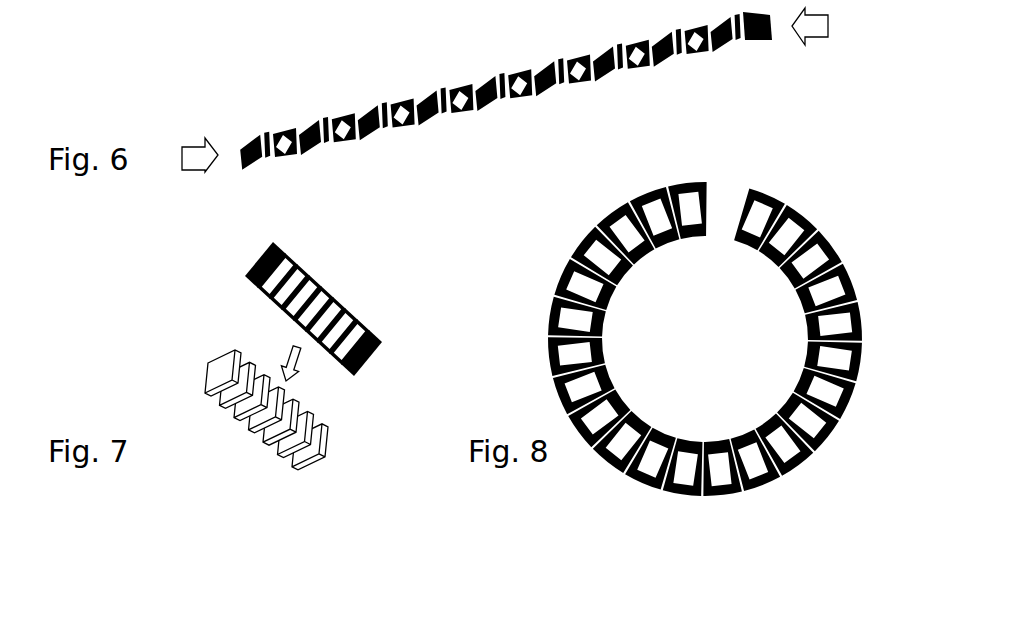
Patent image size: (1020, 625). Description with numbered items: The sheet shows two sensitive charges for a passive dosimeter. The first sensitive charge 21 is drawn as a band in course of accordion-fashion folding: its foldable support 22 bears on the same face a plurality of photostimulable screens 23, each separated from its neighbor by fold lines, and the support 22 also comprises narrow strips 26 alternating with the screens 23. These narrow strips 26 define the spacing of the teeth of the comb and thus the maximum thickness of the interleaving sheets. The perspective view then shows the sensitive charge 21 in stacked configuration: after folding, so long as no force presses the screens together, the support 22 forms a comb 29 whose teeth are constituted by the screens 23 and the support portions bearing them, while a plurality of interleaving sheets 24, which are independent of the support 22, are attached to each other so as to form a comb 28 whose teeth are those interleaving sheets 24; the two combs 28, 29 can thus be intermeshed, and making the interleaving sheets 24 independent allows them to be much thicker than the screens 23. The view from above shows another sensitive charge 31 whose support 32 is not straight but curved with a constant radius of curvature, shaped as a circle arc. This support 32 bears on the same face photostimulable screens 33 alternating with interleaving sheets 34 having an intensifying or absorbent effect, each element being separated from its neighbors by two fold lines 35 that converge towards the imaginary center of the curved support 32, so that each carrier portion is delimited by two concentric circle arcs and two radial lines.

In FIG. 6, the sensitive charge 21 is at (471, 119).
In FIG. 6, the foldable support 22 is at (732, 49).
In FIG. 6, the photostimulable screen 23 is at (285, 133).
In FIG. 6, the narrow strip 26 is at (556, 57).
In FIG. 7, the interleaving sheet 24 is at (299, 449).
In FIG. 7, the comb 28 is at (201, 383).
In FIG. 7, the comb 29 is at (345, 306).
In FIG. 8, the sensitive charge 31 is at (800, 170).
In FIG. 8, the support 32 is at (743, 187).
In FIG. 8, the photostimulable screen 33 is at (601, 260).
In FIG. 8, the interleaving sheet 34 is at (653, 458).
In FIG. 8, the fold line 35 is at (767, 247).